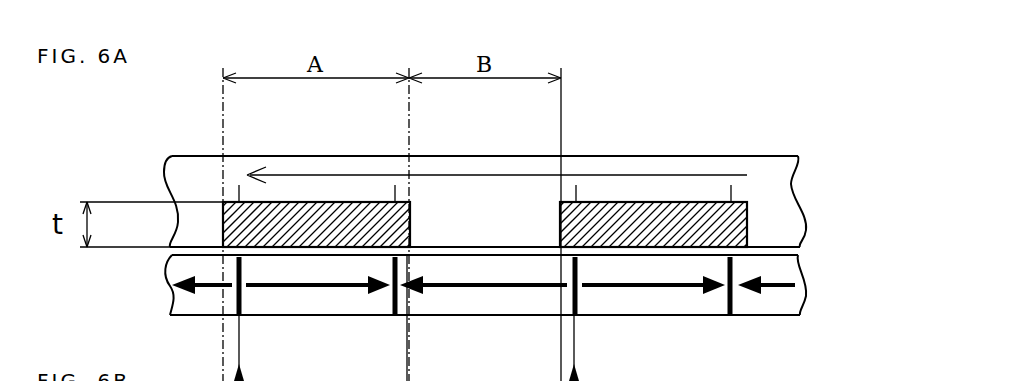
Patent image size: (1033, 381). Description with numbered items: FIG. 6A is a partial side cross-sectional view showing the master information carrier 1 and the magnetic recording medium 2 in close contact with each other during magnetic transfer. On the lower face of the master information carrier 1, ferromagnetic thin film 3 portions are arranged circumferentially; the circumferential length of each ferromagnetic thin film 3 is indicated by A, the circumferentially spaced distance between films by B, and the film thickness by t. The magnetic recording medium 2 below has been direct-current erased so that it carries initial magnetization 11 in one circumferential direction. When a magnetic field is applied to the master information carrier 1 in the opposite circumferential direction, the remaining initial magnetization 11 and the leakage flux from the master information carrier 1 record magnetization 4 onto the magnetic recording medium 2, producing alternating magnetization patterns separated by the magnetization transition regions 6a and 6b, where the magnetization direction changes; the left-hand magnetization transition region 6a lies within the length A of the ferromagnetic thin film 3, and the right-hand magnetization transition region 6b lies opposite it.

The master information carrier 1 is at (780, 185).
The magnetic recording medium 2 is at (783, 272).
The ferromagnetic thin film 3 is at (305, 207).
The magnetization 4 is at (482, 288).
The magnetization transition region 6a is at (243, 302).
The magnetization transition region 6b is at (391, 302).
The initial magnetization 11 is at (320, 292).